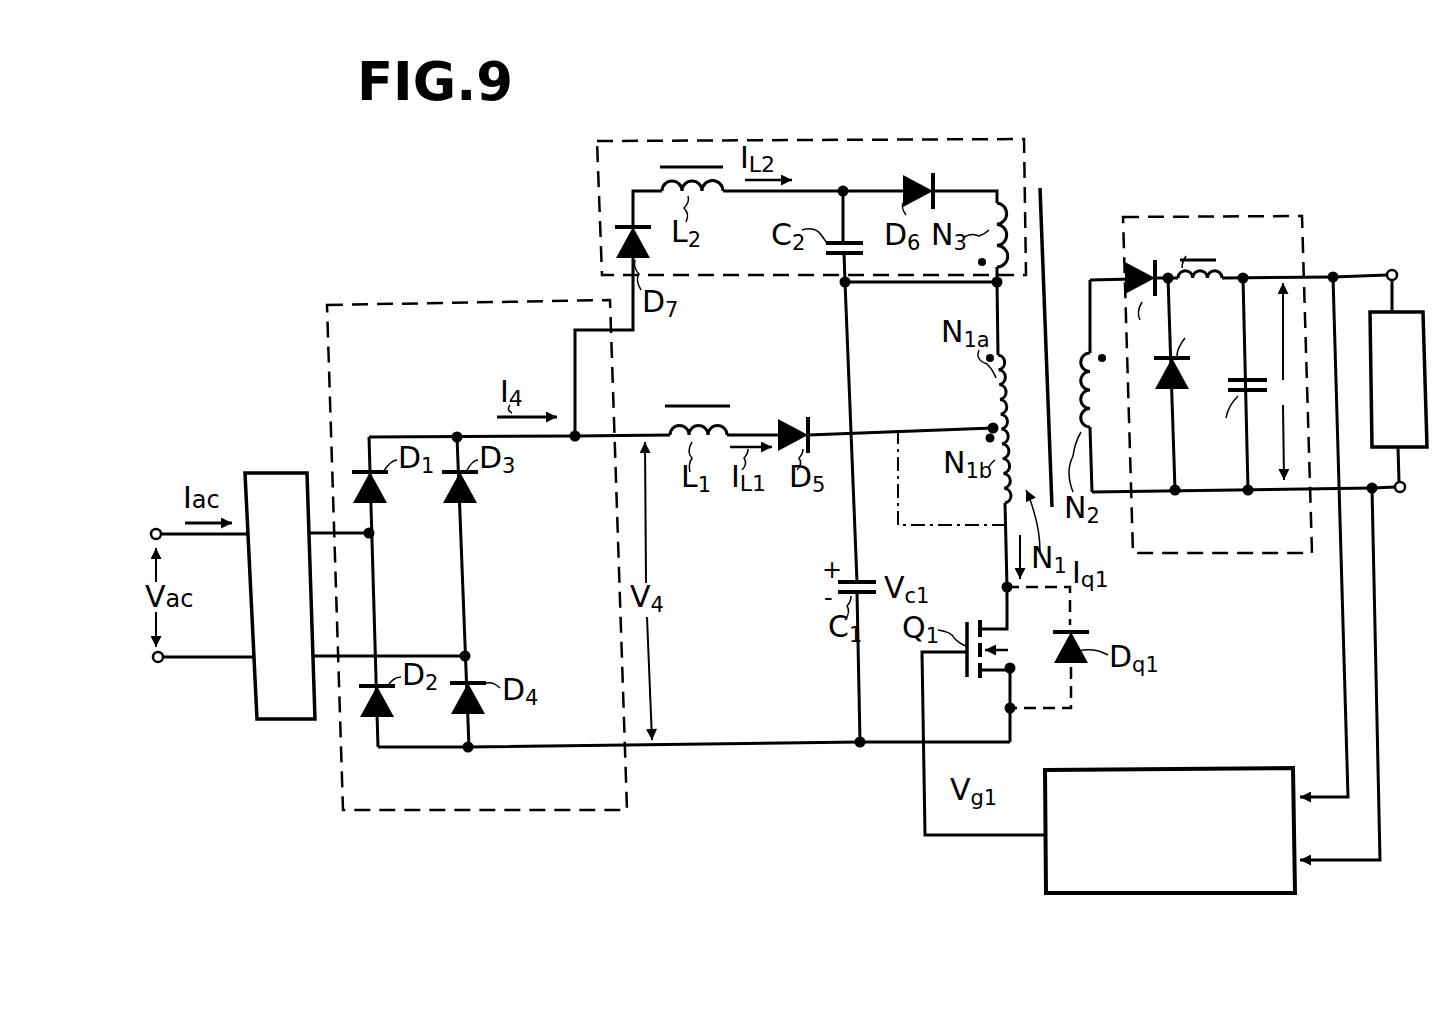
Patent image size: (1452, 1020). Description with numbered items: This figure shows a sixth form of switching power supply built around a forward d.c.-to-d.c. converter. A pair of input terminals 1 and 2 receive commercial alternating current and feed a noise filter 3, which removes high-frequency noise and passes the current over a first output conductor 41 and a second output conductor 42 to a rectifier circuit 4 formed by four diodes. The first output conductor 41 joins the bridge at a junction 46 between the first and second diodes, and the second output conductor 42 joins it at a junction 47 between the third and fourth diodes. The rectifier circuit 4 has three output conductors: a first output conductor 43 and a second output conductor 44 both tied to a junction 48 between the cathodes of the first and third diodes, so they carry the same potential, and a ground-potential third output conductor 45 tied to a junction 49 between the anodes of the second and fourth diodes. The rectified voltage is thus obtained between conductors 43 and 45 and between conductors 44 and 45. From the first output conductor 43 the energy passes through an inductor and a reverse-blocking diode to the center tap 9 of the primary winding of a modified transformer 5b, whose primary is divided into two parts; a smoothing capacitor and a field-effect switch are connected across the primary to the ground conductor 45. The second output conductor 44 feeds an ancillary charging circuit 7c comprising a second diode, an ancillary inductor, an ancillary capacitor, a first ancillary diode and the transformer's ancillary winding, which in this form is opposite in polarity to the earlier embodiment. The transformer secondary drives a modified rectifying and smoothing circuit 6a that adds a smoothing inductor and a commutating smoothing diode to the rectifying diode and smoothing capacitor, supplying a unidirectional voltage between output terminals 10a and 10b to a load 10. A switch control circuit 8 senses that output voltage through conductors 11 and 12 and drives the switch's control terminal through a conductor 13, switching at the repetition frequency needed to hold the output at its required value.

The input terminal 1 is at (157, 529).
The input terminal 2 is at (158, 663).
The noise filter 3 is at (268, 472).
The rectifier circuit 4 is at (369, 305).
The transformer 5b is at (1051, 200).
The rectifying and smoothing circuit 6a is at (1220, 216).
The ancillary charging circuit 7c is at (597, 218).
The switch control circuit 8 is at (1177, 769).
The tap 9 is at (990, 424).
The load 10 is at (1388, 310).
The output terminal 10a is at (1390, 271).
The output terminal 10b is at (1401, 493).
The conductor 11 is at (1345, 723).
The conductor 12 is at (1380, 728).
The conductor 13 is at (949, 792).
The first output conductor 41 is at (330, 527).
The second output conductor 42 is at (330, 662).
The first output conductor 43 is at (619, 434).
The second output conductor 44 is at (614, 334).
The third output conductor 45 is at (628, 750).
The junction 46 is at (374, 537).
The junction 47 is at (462, 654).
The junction 48 is at (458, 432).
The junction 49 is at (470, 753).